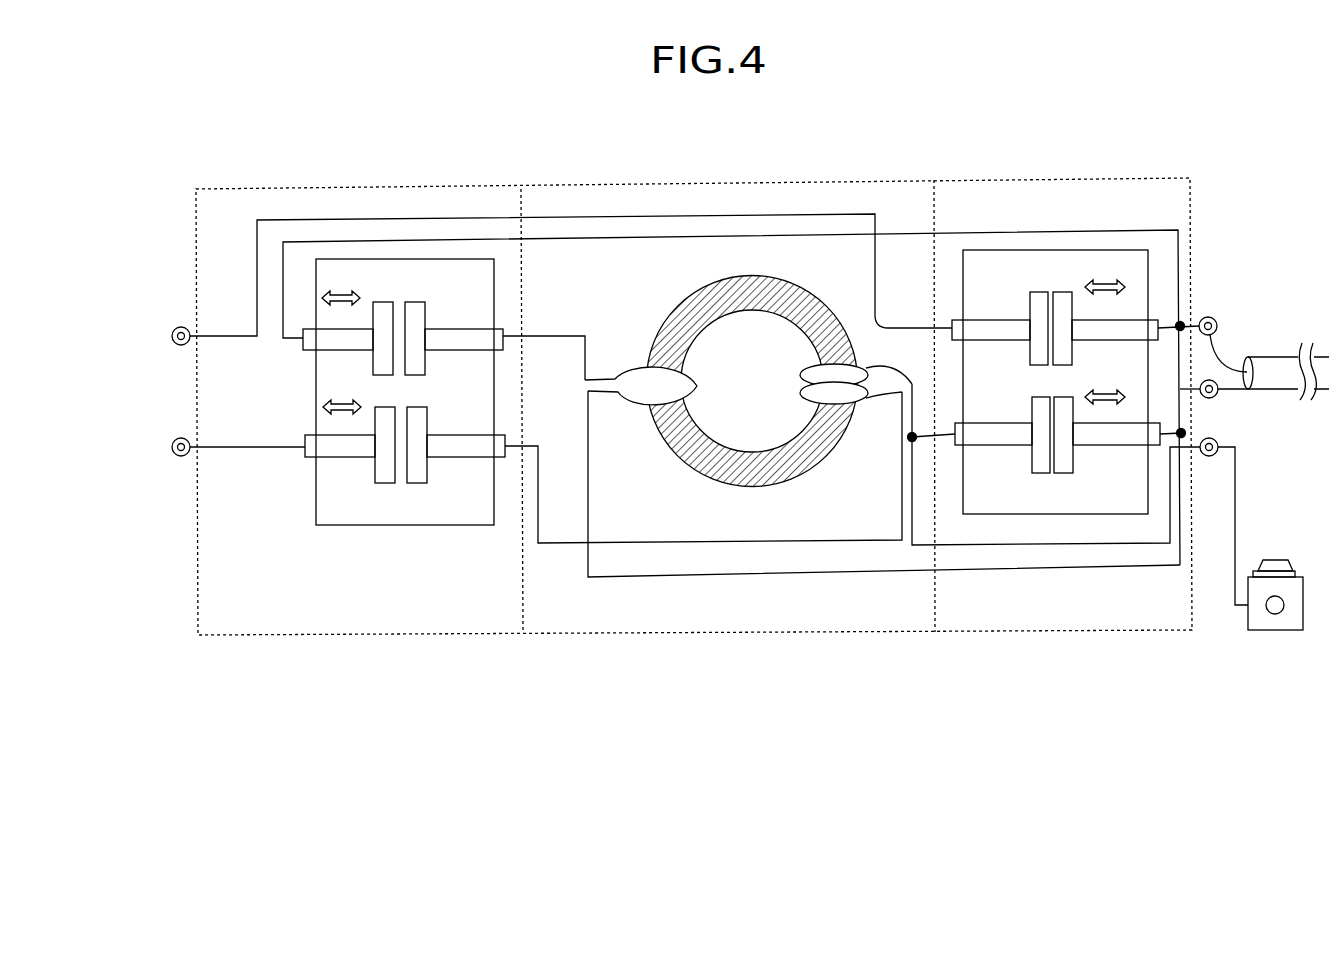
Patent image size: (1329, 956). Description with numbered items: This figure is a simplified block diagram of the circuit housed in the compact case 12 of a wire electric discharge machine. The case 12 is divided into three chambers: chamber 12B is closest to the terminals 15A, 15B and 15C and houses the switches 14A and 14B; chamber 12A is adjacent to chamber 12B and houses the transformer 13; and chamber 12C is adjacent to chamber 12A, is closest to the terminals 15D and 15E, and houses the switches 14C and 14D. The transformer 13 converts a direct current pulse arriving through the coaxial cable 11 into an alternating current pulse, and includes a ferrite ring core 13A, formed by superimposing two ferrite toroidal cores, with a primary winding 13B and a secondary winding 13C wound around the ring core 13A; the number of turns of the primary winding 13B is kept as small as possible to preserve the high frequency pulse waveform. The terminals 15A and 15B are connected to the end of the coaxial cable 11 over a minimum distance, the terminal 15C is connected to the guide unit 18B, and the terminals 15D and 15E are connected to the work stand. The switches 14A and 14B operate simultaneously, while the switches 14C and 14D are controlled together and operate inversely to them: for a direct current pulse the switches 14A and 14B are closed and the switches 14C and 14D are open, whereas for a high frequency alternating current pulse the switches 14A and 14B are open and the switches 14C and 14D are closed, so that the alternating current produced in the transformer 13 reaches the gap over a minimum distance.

The coaxial cable 11 is at (1280, 358).
The case 12 is at (718, 632).
The chamber 12A is at (720, 195).
The chamber 12B is at (1062, 250).
The chamber 12C is at (343, 259).
The transformer 13 is at (748, 383).
The ferrite ring core 13A is at (684, 462).
The primary winding 13B is at (631, 372).
The secondary winding 13C is at (873, 408).
The switch 14A is at (1042, 292).
The switch 14B is at (1040, 478).
The switch 14C is at (401, 300).
The switch 14D is at (398, 488).
The terminal 15A is at (1203, 315).
The terminal 15B is at (1218, 398).
The terminal 15C is at (1220, 440).
The terminal 15D is at (171, 447).
The terminal 15E is at (171, 336).
The guide unit 18B is at (1277, 632).